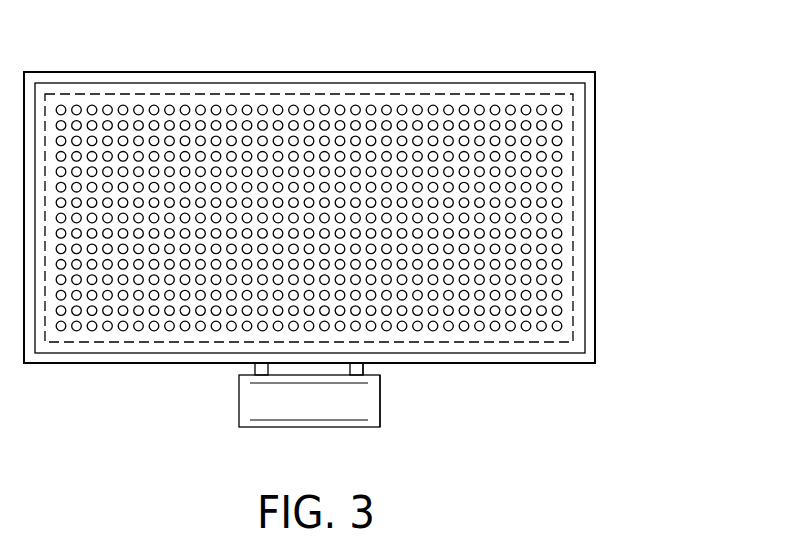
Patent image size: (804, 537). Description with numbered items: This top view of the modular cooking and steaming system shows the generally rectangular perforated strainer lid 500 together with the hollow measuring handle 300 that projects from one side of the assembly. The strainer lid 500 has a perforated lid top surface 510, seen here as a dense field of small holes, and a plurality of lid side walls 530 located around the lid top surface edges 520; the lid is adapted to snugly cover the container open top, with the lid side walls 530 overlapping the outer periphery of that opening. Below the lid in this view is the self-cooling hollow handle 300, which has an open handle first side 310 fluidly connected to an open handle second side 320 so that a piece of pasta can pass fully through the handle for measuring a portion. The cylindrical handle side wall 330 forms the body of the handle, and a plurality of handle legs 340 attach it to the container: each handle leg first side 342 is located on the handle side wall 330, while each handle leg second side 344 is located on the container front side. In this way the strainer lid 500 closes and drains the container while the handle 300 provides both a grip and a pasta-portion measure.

The strainer lid 500 is at (603, 167).
The lid top surface 510 is at (178, 116).
The lid top surface edge 520 is at (370, 83).
The lid side wall 530 is at (595, 250).
The handle 300 is at (290, 430).
The handle first side 310 is at (370, 402).
The handle second side 320 is at (246, 399).
The handle side wall 330 is at (288, 402).
The handle leg 340 is at (258, 368).
The handle leg first side 342 is at (360, 369).
The handle leg second side 344 is at (363, 367).